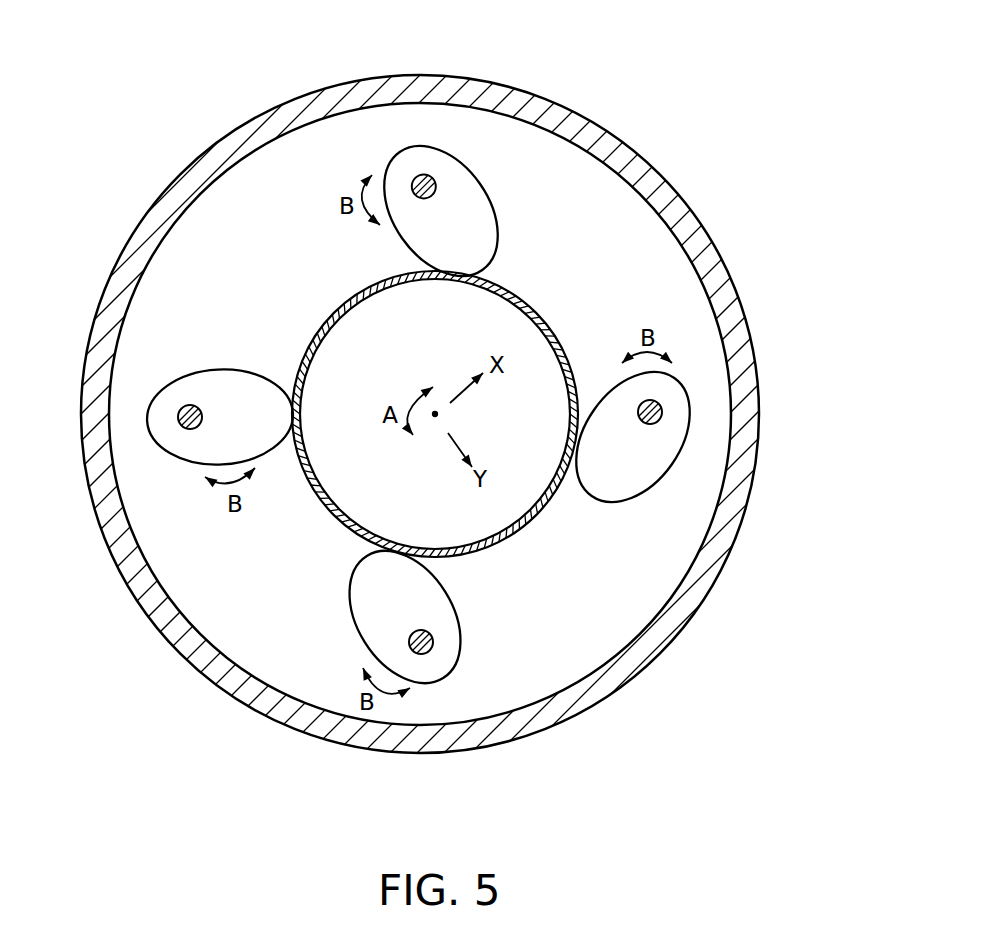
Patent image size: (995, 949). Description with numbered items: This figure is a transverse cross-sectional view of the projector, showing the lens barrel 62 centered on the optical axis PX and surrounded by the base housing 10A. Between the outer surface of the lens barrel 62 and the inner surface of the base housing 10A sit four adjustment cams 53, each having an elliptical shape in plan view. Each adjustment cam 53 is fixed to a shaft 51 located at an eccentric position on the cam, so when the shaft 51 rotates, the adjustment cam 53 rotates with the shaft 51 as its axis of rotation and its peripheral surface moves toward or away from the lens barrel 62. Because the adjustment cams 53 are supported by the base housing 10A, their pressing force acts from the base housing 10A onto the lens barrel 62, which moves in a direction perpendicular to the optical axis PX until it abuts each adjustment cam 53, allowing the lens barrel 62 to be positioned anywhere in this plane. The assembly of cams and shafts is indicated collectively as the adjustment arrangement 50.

The base housing 10A is at (575, 110).
The roller unit 50 is at (388, 138).
The shaft 51 is at (434, 184).
The adjustment cam 53 is at (493, 205).
The lens barrel 62 is at (535, 310).
The optical axis PX is at (437, 415).